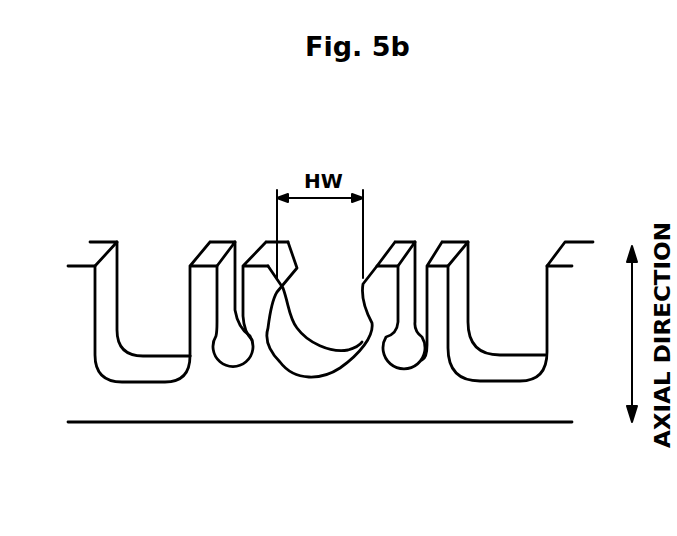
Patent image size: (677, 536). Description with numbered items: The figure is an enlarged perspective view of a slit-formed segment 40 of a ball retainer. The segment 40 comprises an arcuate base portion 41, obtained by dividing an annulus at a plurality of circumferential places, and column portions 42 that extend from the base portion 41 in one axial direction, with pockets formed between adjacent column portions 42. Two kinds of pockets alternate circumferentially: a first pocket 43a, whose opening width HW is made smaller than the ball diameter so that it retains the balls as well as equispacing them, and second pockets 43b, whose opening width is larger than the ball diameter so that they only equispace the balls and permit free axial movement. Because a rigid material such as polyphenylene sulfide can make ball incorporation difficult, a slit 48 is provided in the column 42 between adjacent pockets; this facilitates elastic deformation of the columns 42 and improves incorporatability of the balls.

The segment 40 is at (451, 423).
The arcuate base portion 41 is at (348, 414).
The column portion 42 is at (92, 250).
The first pocket 43a is at (298, 350).
The second pocket 43b is at (149, 273).
The slit 48 is at (228, 305).